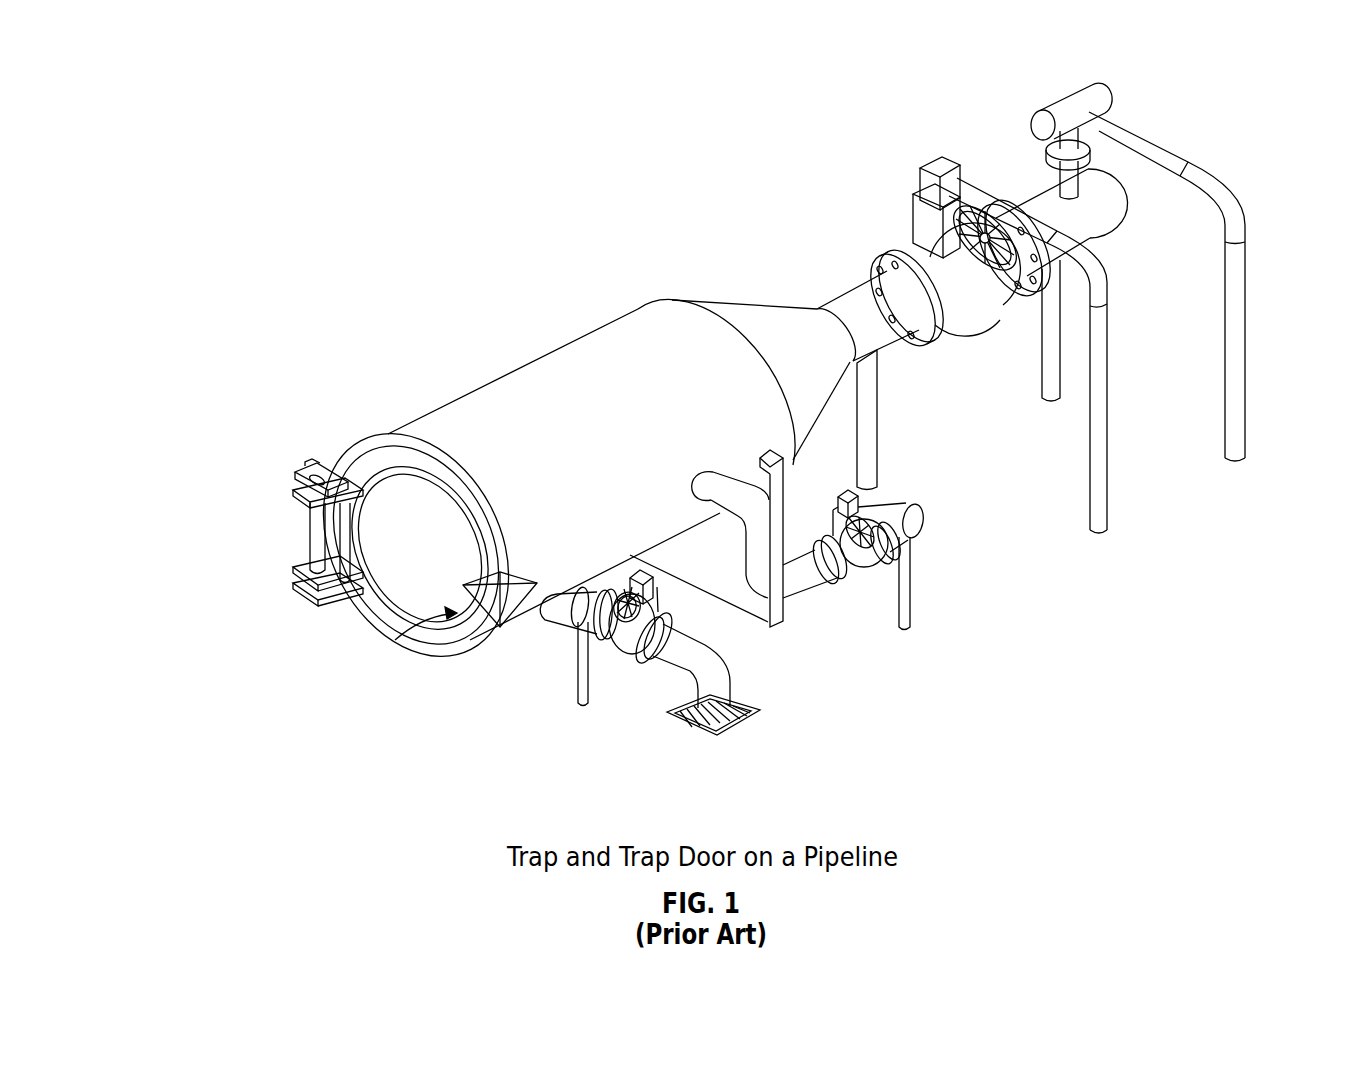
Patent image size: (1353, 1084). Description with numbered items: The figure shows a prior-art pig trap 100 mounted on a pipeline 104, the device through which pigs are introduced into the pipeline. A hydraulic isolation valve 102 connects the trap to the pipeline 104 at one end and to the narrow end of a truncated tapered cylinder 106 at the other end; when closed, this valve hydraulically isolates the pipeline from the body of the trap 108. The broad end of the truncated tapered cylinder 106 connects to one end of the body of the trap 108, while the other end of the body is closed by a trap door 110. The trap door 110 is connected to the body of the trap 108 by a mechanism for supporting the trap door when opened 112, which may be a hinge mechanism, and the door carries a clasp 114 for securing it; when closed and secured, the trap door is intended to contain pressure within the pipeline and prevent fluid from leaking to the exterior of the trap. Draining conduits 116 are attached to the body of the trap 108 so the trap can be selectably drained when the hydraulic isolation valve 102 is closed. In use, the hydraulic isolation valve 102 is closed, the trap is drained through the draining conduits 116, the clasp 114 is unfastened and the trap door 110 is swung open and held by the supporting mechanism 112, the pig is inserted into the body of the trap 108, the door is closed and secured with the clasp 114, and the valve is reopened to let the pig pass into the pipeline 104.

The trap 100 is at (377, 157).
The hydraulic isolation valve 102 is at (525, 362).
The pipeline 104 is at (455, 622).
The truncated tapered cylinder 106 is at (318, 527).
The body of the trap 108 is at (505, 645).
The trap door 110 is at (905, 159).
The mechanism for supporting the trap door when opened 112 is at (1150, 205).
The clasp 114 is at (820, 398).
The draining conduits 116 is at (548, 605).